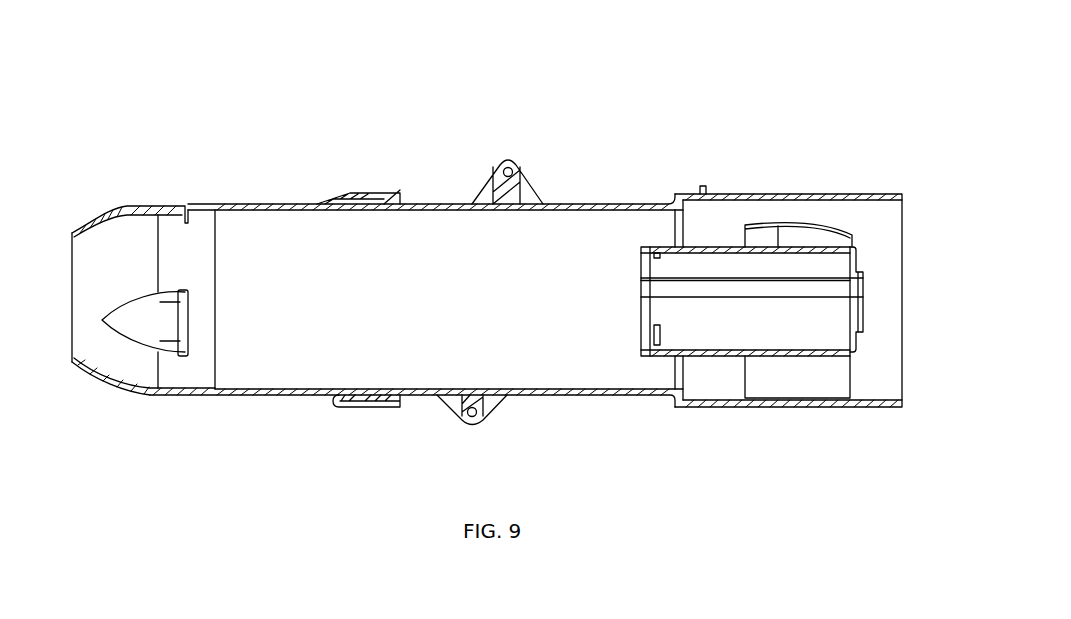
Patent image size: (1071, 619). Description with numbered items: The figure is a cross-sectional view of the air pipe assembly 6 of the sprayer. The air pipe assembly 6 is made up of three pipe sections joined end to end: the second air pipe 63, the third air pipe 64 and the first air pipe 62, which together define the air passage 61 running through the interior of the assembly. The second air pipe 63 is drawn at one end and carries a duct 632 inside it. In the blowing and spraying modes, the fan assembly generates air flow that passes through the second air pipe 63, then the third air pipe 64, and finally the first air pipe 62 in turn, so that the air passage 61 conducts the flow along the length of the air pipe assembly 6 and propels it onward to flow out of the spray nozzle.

The air pipe assembly 6 is at (488, 43).
The air passage 61 is at (466, 362).
The first air pipe 62 is at (143, 257).
The second air pipe 63 is at (862, 232).
The duct 632 is at (735, 265).
The third air pipe 64 is at (417, 250).